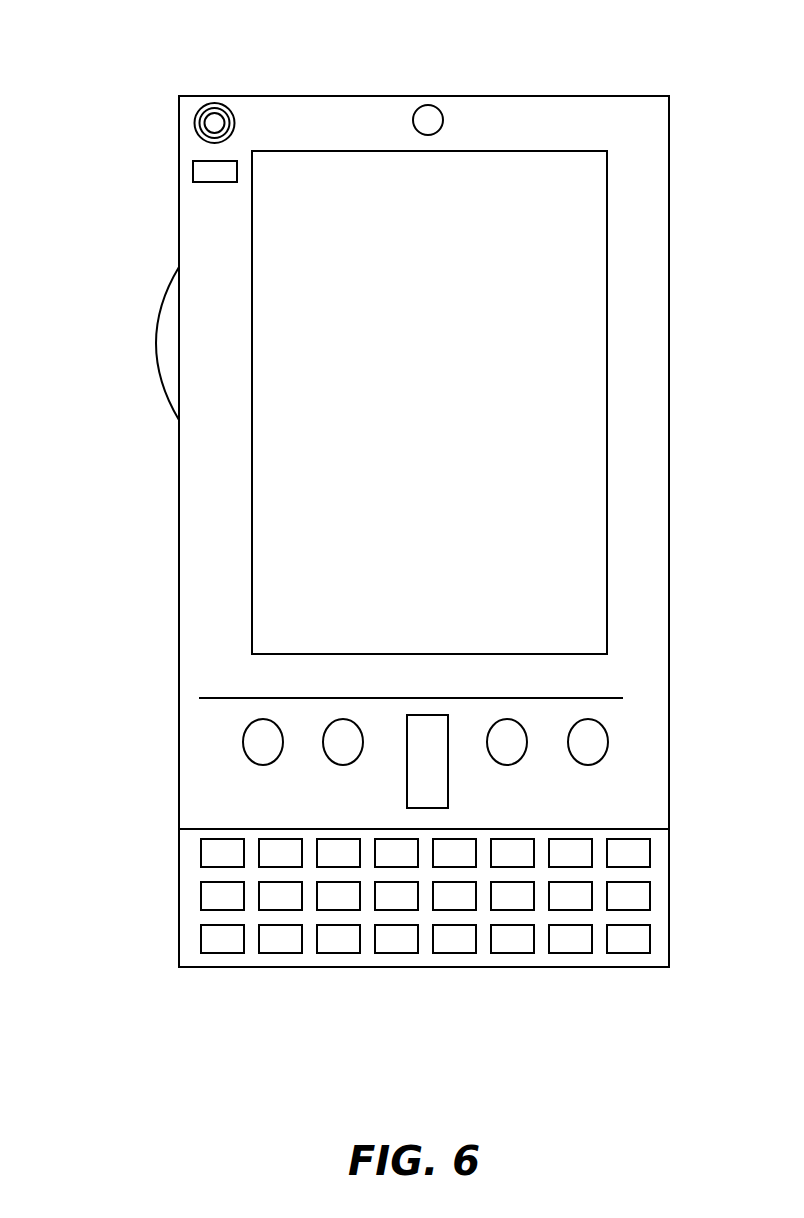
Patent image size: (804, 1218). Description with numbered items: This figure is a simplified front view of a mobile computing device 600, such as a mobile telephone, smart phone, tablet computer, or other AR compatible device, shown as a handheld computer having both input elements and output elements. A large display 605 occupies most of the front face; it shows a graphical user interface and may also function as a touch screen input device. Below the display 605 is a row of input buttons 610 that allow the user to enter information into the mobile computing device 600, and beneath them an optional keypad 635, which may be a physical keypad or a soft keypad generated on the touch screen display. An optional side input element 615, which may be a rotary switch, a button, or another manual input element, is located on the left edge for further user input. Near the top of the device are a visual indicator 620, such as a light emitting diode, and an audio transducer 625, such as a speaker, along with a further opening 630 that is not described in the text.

The mobile computing device 600 is at (656, 114).
The display 605 is at (360, 569).
The input buttons 610 is at (427, 767).
The side input element 615 is at (168, 343).
The visual indicator 620 is at (193, 177).
The audio transducer 625 is at (195, 125).
The speaker/microphone 630 is at (441, 118).
The keypad 635 is at (188, 943).